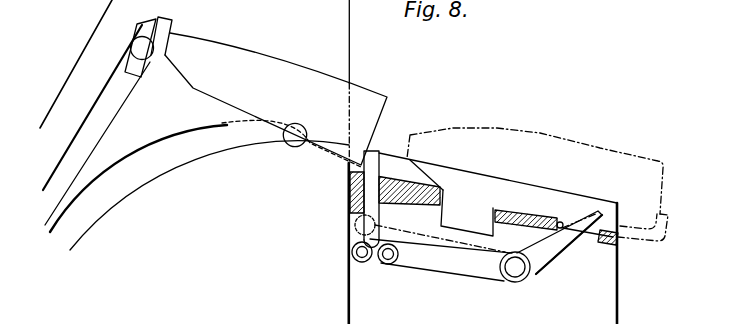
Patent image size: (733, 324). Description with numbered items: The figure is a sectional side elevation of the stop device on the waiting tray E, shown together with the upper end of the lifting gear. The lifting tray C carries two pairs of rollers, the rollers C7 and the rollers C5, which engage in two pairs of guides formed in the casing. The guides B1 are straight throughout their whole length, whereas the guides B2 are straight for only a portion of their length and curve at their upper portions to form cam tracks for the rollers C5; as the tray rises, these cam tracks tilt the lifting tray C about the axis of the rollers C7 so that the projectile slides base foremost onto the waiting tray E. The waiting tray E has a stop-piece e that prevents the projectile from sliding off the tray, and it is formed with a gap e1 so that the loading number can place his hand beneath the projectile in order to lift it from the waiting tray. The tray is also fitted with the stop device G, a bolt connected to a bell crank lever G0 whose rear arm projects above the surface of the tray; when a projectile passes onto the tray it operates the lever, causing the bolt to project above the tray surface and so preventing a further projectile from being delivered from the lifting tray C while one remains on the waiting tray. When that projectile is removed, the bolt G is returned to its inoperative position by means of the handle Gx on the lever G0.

The guides B1 is at (110, 102).
The guides B2 is at (130, 170).
The lifting tray C is at (322, 143).
The rollers C5 is at (298, 125).
The rollers C7 is at (152, 44).
The stop device G is at (368, 195).
The handle Gx is at (387, 265).
The bell crank lever G0 is at (440, 265).
The waiting tray E is at (533, 202).
The gap e1 is at (454, 208).
The stop-piece e is at (630, 242).